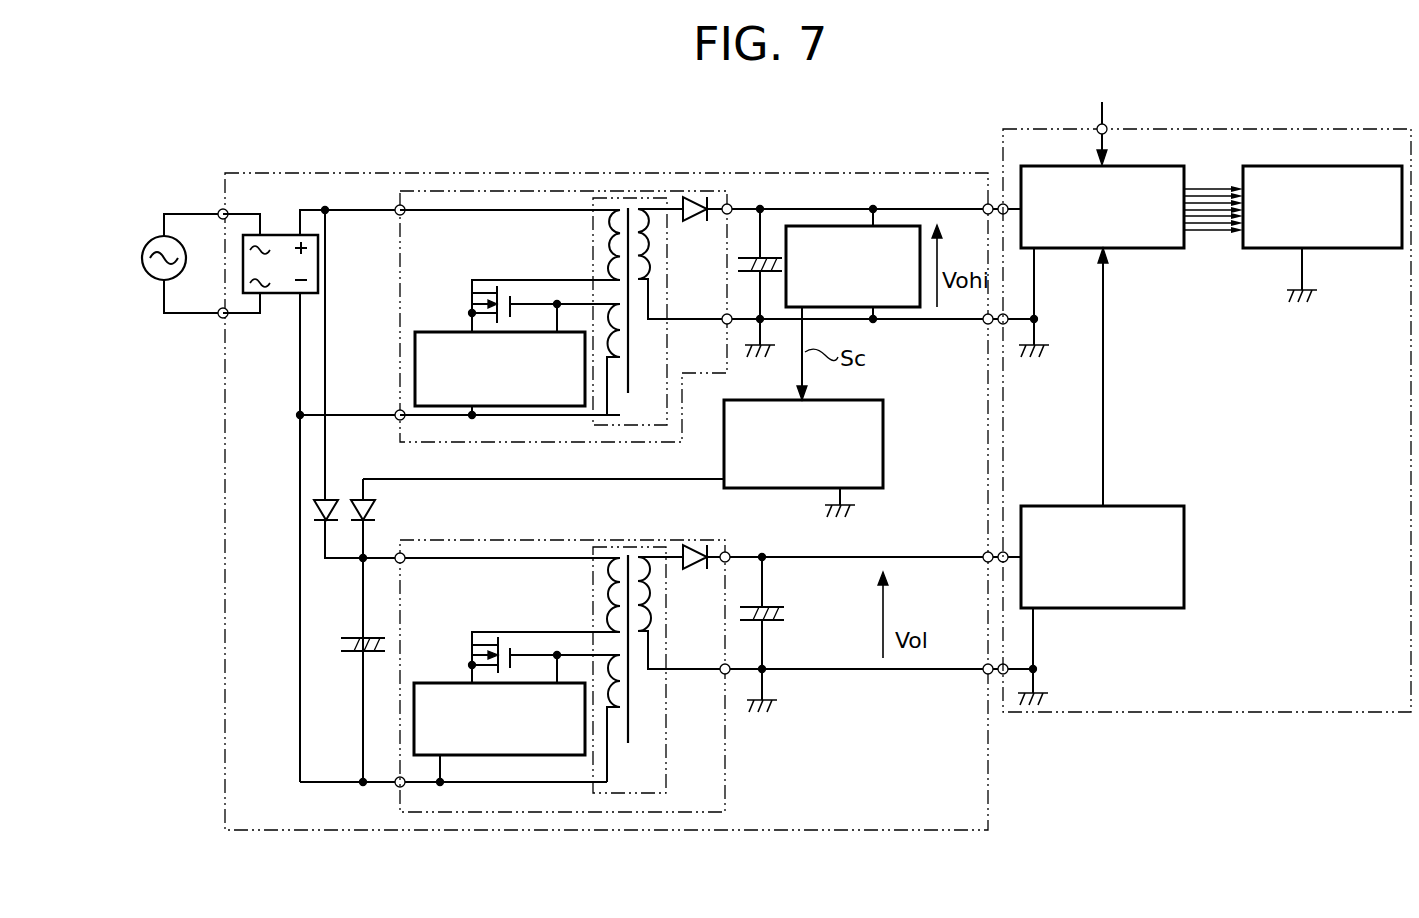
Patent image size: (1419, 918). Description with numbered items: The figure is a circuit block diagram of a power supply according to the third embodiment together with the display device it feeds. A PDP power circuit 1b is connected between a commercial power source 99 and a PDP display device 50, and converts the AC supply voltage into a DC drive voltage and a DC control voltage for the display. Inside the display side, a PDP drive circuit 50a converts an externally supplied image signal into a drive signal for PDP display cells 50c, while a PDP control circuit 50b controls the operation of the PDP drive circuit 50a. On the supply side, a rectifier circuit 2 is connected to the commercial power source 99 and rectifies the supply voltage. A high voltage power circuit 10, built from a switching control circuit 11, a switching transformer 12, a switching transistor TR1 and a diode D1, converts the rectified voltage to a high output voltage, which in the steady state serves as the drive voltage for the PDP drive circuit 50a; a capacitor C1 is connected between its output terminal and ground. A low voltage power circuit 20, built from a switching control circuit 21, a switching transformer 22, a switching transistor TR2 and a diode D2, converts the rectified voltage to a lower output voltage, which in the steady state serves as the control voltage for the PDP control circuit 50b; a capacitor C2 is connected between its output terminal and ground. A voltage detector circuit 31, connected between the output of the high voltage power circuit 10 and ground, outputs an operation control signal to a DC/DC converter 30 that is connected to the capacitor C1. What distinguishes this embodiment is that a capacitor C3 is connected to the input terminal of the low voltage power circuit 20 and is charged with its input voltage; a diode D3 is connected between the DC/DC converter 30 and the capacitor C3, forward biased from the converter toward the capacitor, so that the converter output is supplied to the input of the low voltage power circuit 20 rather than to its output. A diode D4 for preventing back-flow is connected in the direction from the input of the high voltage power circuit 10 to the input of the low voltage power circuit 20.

The PDP power circuit 1b is at (988, 810).
The rectifier circuit 2 is at (278, 235).
The high voltage power circuit 10 is at (436, 191).
The switching control circuit 11 is at (444, 406).
The switching transformer 12 is at (602, 194).
The low voltage power circuit 20 is at (398, 803).
The switching control circuit 21 is at (414, 725).
The switching transformer 22 is at (668, 778).
The DC/DC converter 30 is at (885, 410).
The voltage detector circuit 31 is at (905, 226).
The PDP display device 50 is at (1170, 714).
The PDP drive circuit 50a is at (1142, 250).
The PDP control circuit 50b is at (1156, 506).
The PDP display cells 50c is at (1357, 250).
The commercial power source 99 is at (147, 277).
The switching transistor TR1 is at (470, 300).
The switching transistor TR2 is at (470, 655).
The diode D1 is at (698, 195).
The diode D2 is at (697, 572).
The diode D3 is at (380, 505).
The diode D4 is at (318, 510).
The capacitor C1 is at (765, 256).
The capacitor C2 is at (772, 606).
The capacitor C3 is at (355, 636).